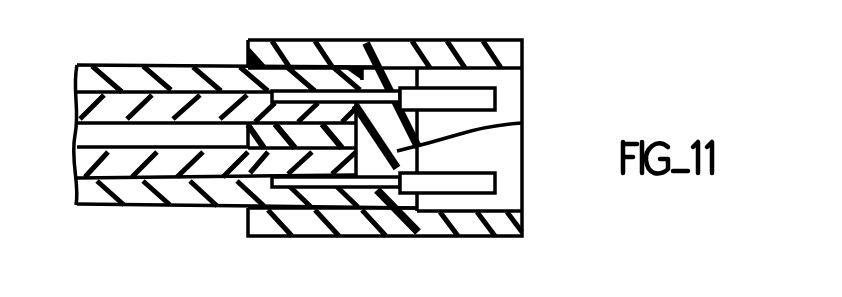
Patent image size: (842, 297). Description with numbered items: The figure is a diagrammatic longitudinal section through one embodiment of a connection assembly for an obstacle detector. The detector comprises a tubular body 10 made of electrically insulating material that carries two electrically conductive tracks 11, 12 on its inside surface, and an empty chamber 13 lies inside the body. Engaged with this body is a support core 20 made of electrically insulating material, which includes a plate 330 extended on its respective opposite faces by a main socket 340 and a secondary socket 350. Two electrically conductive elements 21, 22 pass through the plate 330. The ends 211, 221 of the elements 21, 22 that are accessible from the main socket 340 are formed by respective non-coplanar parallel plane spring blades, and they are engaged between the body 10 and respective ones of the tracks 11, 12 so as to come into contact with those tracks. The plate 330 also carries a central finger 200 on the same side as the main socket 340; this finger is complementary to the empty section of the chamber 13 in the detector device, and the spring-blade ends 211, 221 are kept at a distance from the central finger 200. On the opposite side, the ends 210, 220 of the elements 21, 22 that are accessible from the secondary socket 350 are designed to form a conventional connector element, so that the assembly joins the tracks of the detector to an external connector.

The tubular body 10 is at (233, 130).
The electrically conductive track 11 is at (80, 72).
The electrically conductive track 12 is at (97, 207).
The chamber 13 is at (131, 137).
The central finger 200 is at (197, 207).
The support core 20 is at (383, 225).
The electrically conductive element 21 is at (376, 88).
The electrically conductive element 22 is at (350, 196).
The end of element 210 is at (487, 97).
The end of element 211 is at (308, 88).
The end of element 220 is at (468, 185).
The end of element 221 is at (267, 233).
The plate 330 is at (522, 123).
The main socket 340 is at (274, 55).
The secondary socket 350 is at (497, 52).